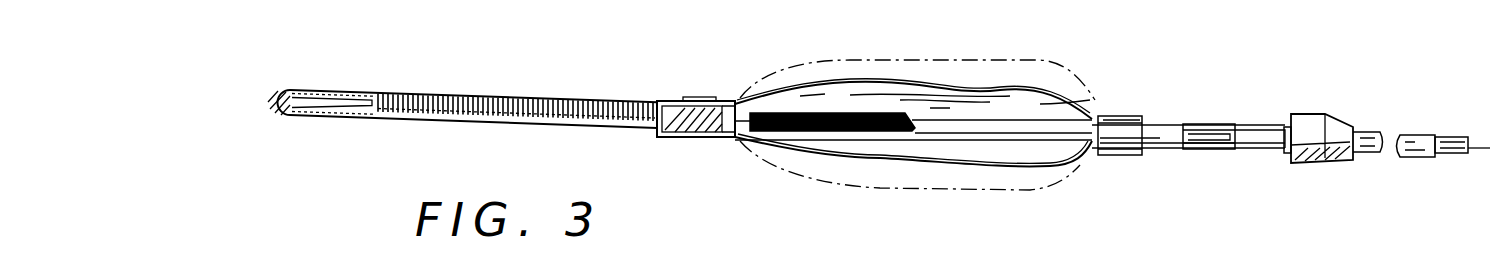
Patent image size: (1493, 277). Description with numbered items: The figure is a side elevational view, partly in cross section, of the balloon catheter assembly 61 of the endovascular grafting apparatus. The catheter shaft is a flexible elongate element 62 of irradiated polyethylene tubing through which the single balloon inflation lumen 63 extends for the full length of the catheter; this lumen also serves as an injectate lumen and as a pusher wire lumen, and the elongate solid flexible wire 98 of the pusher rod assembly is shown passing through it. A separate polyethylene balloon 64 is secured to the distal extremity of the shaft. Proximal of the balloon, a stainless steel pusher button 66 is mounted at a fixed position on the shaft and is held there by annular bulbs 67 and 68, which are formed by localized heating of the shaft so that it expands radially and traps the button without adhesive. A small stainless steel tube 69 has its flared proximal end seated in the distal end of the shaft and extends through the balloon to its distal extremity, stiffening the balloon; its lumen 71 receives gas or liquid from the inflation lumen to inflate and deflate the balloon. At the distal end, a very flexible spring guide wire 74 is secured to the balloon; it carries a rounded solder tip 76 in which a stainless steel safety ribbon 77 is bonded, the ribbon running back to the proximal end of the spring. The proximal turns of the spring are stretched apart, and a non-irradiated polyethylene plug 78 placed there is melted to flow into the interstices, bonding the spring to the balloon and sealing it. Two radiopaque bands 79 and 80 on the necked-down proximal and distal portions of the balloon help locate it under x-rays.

The balloon catheter assembly 61 is at (1392, 128).
The flexible elongate element 62 is at (1208, 149).
The balloon inflation lumen 63 is at (1222, 135).
The balloon 64 is at (922, 170).
The pusher button 66 is at (1310, 122).
The annular bulb 67 is at (1350, 158).
The annular bulb 68 is at (1284, 152).
The stainless steel tube 69 is at (1018, 141).
The lumen 71 is at (838, 132).
The guide wire 74 is at (510, 122).
The rounded tip 76 is at (274, 118).
The safety ribbon 77 is at (318, 113).
The plug 78 is at (712, 137).
The radiopaque band 79 is at (1122, 156).
The radiopaque band 80 is at (683, 137).
The flexible wire 98 is at (736, 103).